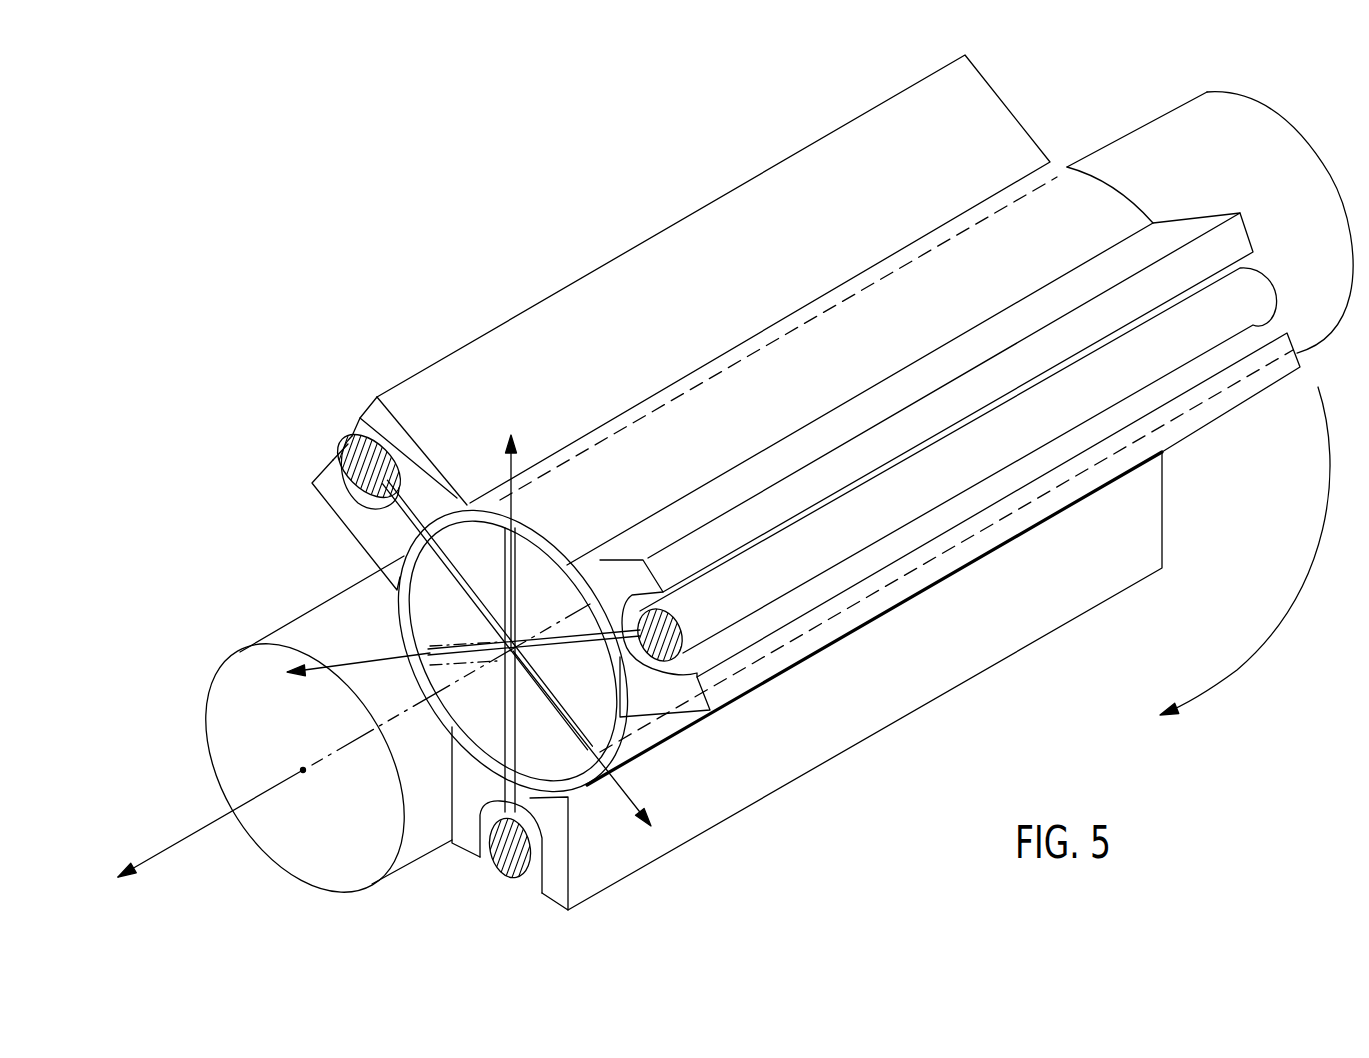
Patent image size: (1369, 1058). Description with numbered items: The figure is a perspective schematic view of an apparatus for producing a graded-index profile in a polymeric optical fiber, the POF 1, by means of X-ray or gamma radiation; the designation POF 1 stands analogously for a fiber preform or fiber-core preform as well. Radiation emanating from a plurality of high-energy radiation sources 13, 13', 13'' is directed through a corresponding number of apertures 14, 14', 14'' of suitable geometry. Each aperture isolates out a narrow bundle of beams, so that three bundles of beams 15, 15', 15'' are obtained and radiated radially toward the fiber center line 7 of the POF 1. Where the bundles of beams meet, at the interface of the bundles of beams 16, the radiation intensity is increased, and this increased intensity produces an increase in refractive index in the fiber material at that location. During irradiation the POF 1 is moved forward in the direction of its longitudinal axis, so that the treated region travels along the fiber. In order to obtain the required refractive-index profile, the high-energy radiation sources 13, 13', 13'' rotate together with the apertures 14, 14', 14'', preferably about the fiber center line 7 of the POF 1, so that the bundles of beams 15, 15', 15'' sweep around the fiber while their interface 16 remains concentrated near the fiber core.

The POF 1 is at (296, 848).
The fiber center line 7 is at (297, 770).
The high-energy radiation source 13 is at (369, 420).
The high-energy radiation source 13' is at (504, 868).
The high-energy radiation source 13'' is at (774, 694).
The aperture 14 is at (493, 558).
The aperture 14' is at (557, 824).
The aperture 14'' is at (725, 704).
The bundle of beams 15 is at (522, 450).
The bundle of beams 15' is at (303, 640).
The bundle of beams 15'' is at (641, 769).
The interface of the bundles of beams 16 is at (514, 640).